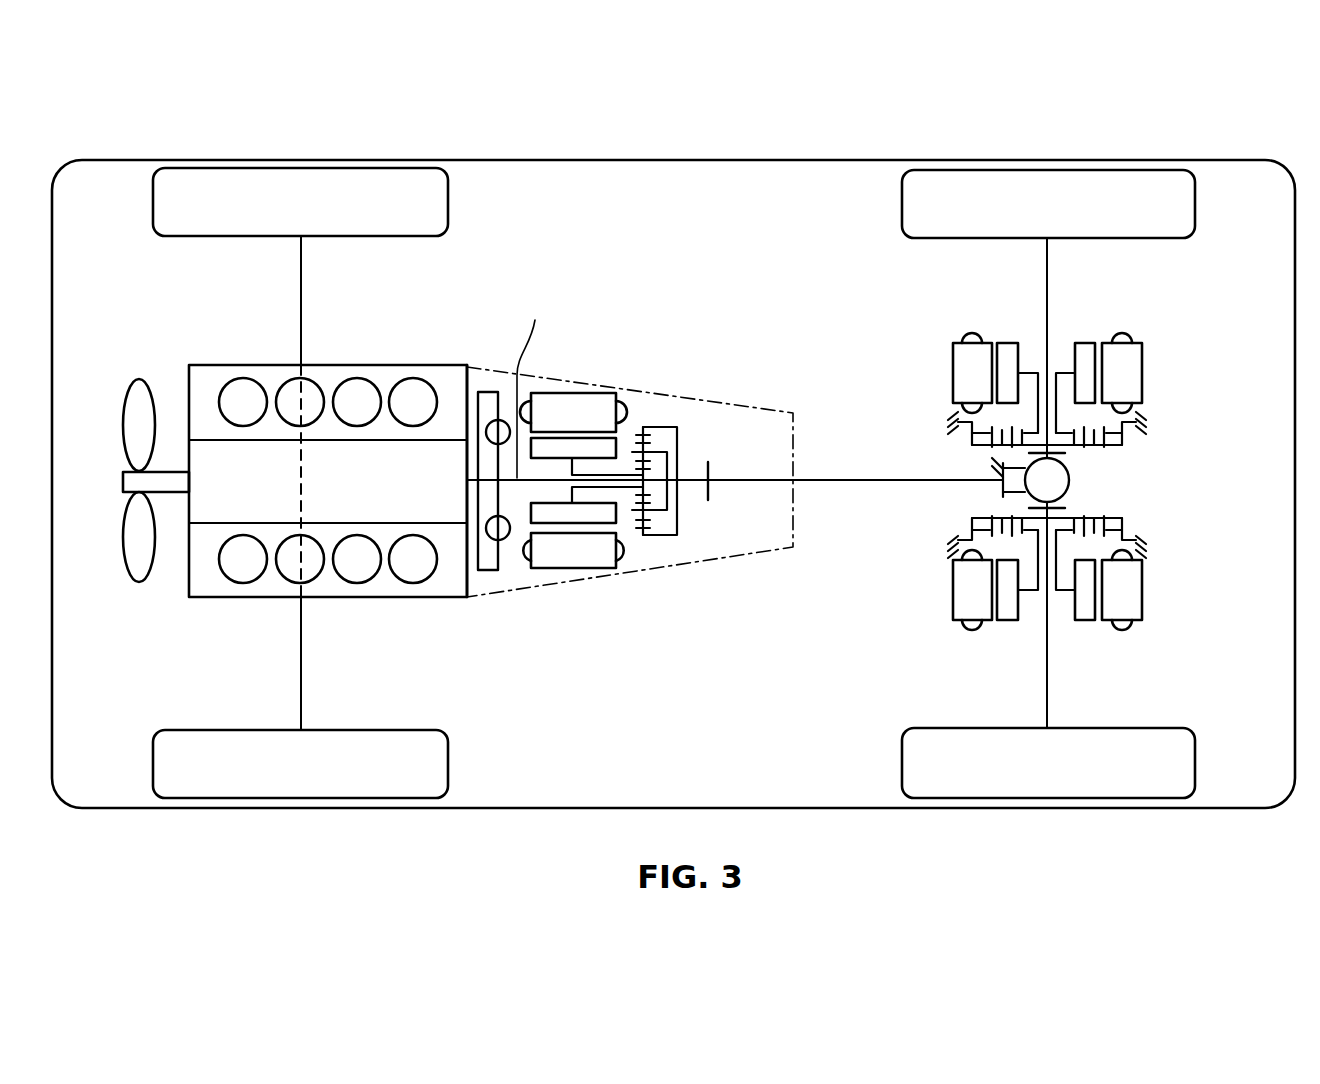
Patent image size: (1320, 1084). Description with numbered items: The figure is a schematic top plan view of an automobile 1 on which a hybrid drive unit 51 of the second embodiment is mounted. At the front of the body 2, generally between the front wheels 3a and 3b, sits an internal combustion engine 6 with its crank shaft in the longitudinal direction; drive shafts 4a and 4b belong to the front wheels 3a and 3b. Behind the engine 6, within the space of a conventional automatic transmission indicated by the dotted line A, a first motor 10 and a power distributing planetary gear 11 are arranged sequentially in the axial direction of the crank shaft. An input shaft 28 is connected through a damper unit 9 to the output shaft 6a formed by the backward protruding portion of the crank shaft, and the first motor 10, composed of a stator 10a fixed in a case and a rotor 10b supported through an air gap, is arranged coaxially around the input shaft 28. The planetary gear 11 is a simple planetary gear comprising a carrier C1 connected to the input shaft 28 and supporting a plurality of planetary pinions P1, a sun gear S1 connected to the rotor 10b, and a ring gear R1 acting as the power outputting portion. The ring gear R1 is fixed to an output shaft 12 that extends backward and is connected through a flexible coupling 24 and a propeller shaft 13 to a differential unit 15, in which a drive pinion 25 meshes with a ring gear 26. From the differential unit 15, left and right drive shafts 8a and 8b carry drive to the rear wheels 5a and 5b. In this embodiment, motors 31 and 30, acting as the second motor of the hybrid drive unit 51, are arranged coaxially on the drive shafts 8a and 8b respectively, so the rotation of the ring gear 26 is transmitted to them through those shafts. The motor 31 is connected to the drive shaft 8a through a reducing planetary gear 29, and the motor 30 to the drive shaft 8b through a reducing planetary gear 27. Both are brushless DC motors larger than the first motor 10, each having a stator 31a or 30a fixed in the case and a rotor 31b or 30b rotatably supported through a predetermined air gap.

The automobile 1 is at (780, 131).
The body 2 is at (693, 158).
The front wheel 3a is at (446, 764).
The front wheel 3b is at (446, 199).
The drive shaft 4a is at (301, 652).
The drive shaft 4b is at (301, 280).
The rear wheel 5a is at (1190, 765).
The rear wheel 5b is at (1190, 200).
The internal combustion engine 6 is at (390, 365).
The output shaft 6a is at (470, 478).
The drive shaft 8a is at (1047, 672).
The drive shaft 8b is at (1047, 290).
The damper unit 9 is at (497, 392).
The first motor 10 is at (590, 422).
The stator 10a is at (572, 410).
The rotor 10b is at (611, 448).
The power distributing planetary gear 11 is at (665, 418).
The output shaft 12 is at (693, 476).
The propeller shaft 13 is at (823, 478).
The differential unit 15 is at (968, 462).
The flexible coupling 24 is at (712, 466).
The drive pinion 25 is at (1000, 490).
The ring gear 26 is at (1086, 472).
The reducing planetary gear 27 is at (1143, 441).
The input shaft 28 is at (533, 385).
The reducing planetary gear 29 is at (1143, 523).
The motor 30 is at (1038, 344).
The stator 30a is at (965, 343).
The rotor 30b is at (1042, 363).
The motor 31 is at (1040, 621).
The stator 31a is at (960, 622).
The rotor 31b is at (1041, 601).
The hybrid drive unit 51 is at (874, 319).
The dotted line A is at (553, 365).
The sun gear S1 is at (642, 488).
The carrier C1 is at (668, 506).
The ring gear R1 is at (678, 530).
The planetary pinion P1 is at (652, 517).